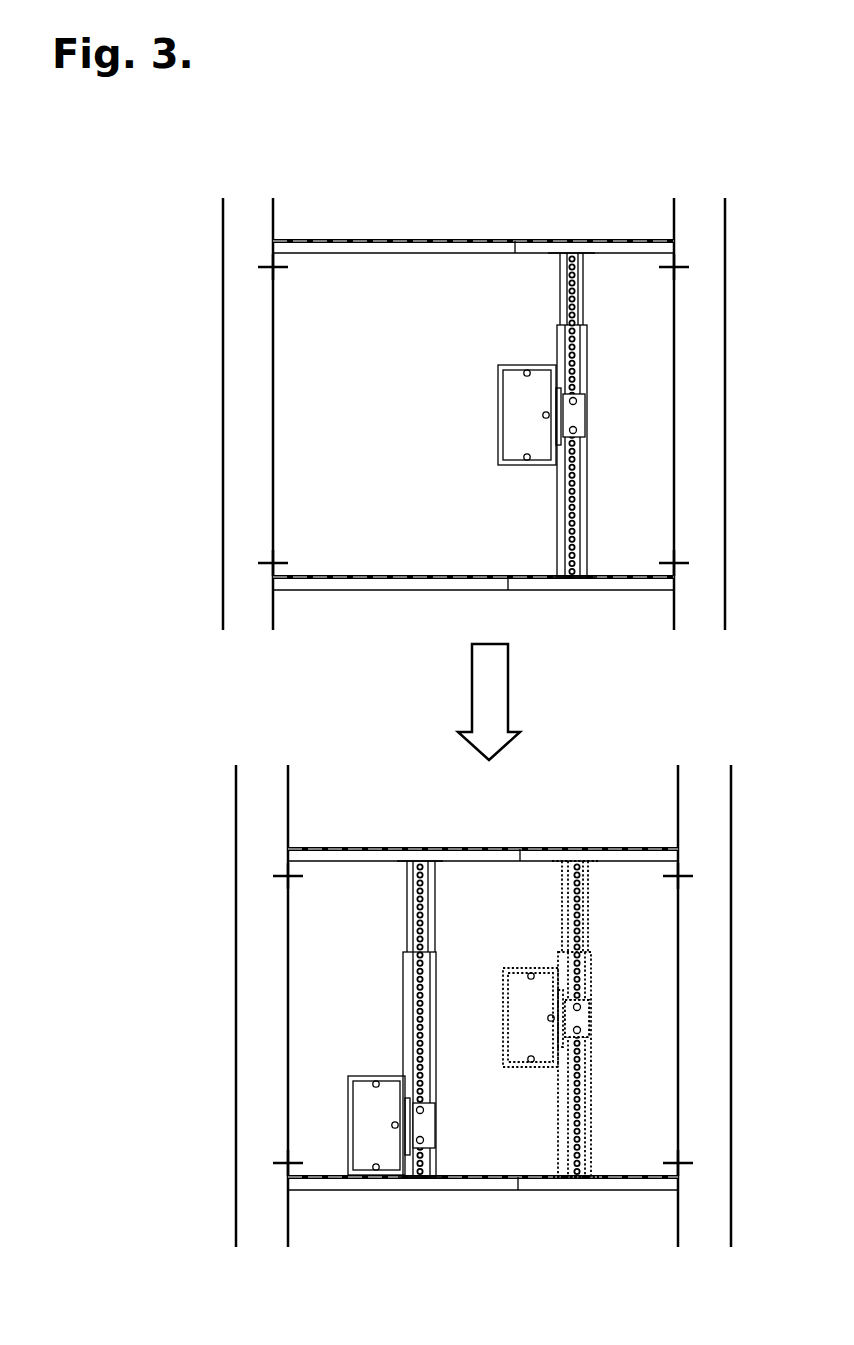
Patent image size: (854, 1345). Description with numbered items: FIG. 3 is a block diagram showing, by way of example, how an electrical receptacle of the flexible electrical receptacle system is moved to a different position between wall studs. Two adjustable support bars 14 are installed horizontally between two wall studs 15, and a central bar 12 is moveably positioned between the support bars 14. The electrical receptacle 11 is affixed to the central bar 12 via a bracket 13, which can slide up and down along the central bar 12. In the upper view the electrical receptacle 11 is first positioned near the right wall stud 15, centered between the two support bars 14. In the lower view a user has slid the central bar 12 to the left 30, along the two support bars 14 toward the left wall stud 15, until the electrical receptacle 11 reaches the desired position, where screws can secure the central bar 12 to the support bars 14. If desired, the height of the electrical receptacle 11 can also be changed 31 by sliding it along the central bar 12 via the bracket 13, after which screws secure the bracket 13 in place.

The electrical receptacle 11 is at (498, 422).
The central bar 12 is at (587, 357).
The bracket 13 is at (586, 412).
The adjustable support bar 14 is at (334, 240).
The wall stud 15 is at (726, 390).
The leftward movement of the central bar 30 is at (561, 1192).
The height change of the electrical receptacle 31 is at (348, 952).